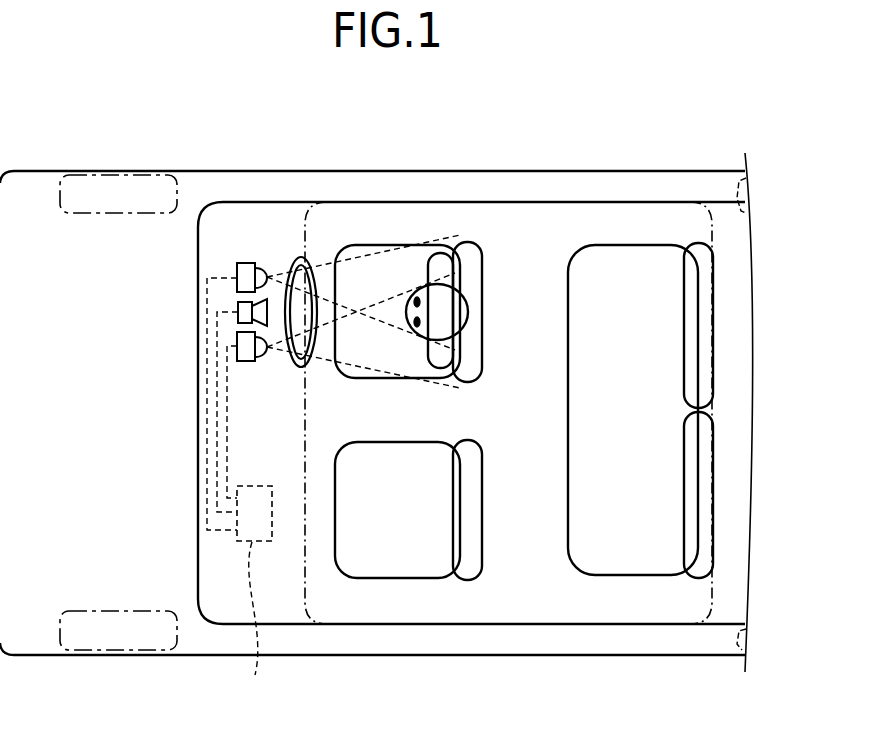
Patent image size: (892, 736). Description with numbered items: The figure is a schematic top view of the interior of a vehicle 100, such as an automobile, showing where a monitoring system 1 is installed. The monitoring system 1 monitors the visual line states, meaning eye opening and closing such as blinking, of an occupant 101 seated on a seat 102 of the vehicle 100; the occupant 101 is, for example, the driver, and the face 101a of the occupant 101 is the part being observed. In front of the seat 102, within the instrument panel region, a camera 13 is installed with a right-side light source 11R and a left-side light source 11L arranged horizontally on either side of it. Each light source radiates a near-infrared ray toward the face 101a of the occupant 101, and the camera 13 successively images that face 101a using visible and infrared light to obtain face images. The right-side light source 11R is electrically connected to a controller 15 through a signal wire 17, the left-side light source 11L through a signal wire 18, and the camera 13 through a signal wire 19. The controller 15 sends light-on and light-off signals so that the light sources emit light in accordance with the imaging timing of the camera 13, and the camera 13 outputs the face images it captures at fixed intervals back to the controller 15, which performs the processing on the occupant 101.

The monitoring system 1 is at (283, 407).
The vehicle 100 is at (458, 157).
The occupant 101 is at (418, 277).
The face 101a is at (398, 313).
The seat 102 is at (383, 243).
The left-side light source 11L is at (237, 266).
The right-side light source 11R is at (243, 363).
The camera 13 is at (238, 304).
The controller 15 is at (256, 625).
The signal wire 17 is at (228, 457).
The signal wire 18 is at (206, 348).
The signal wire 19 is at (204, 390).